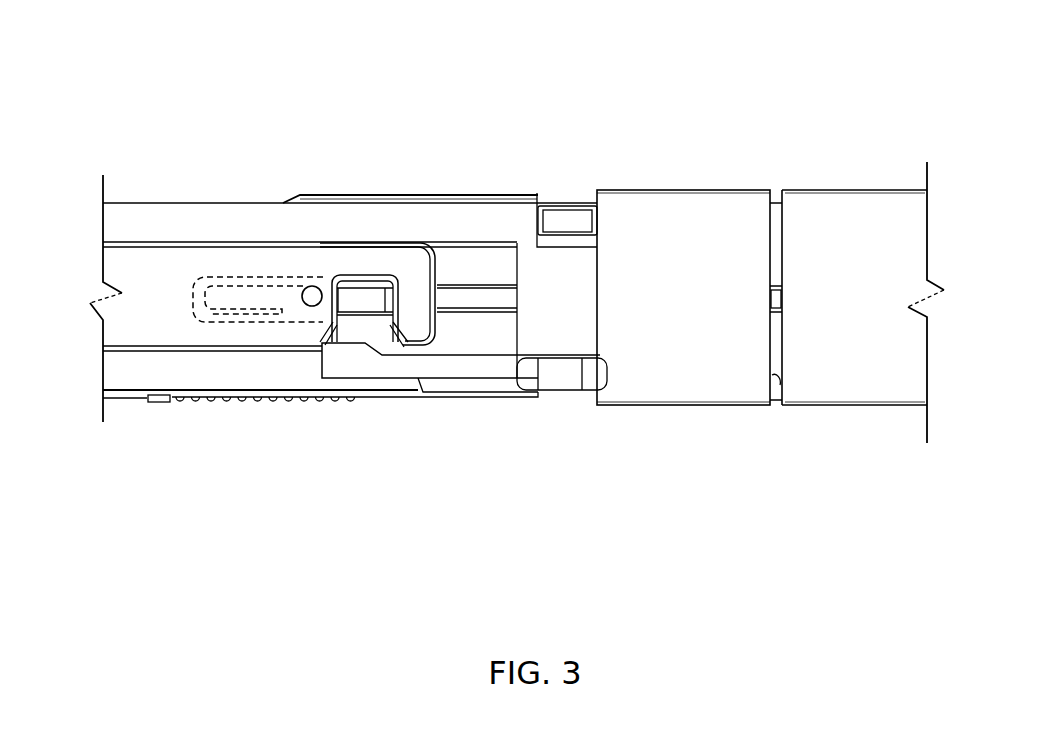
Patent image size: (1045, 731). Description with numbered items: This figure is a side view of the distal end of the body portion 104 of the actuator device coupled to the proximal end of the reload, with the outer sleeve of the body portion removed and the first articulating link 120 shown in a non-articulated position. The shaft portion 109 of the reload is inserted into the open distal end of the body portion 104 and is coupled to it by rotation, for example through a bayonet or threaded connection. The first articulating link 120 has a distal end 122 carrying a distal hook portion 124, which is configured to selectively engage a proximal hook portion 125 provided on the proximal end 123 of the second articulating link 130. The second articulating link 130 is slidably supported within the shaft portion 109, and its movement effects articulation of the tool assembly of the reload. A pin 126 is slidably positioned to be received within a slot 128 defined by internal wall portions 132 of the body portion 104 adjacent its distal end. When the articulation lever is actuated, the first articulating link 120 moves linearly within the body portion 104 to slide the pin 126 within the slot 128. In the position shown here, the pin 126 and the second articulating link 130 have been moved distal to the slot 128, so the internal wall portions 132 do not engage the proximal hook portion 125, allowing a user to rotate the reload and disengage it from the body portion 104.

The body portion 104 is at (207, 202).
The shaft portion 109 is at (845, 190).
The first articulating link 120 is at (268, 262).
The distal end 122 is at (342, 258).
The proximal end 123 is at (485, 302).
The distal hook portion 124 is at (418, 237).
The proximal hook portion 125 is at (372, 297).
The pin 126 is at (303, 282).
The slot 128 is at (212, 322).
The second articulating link 130 is at (457, 288).
The internal wall portions 132 is at (203, 281).